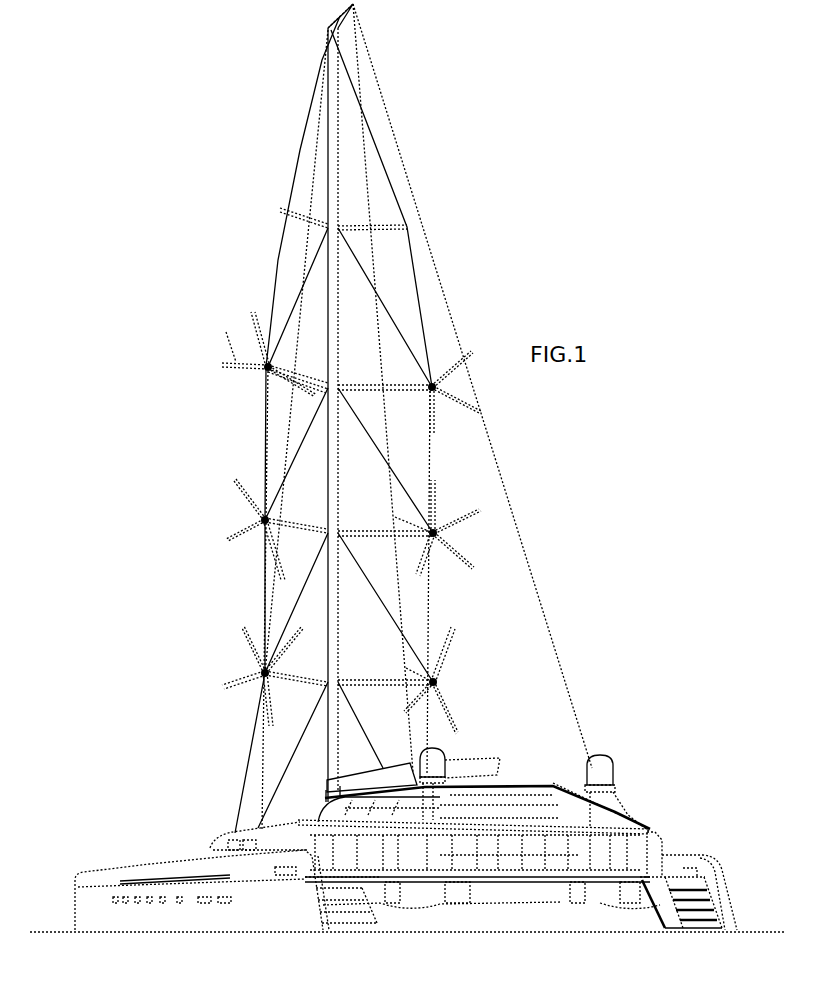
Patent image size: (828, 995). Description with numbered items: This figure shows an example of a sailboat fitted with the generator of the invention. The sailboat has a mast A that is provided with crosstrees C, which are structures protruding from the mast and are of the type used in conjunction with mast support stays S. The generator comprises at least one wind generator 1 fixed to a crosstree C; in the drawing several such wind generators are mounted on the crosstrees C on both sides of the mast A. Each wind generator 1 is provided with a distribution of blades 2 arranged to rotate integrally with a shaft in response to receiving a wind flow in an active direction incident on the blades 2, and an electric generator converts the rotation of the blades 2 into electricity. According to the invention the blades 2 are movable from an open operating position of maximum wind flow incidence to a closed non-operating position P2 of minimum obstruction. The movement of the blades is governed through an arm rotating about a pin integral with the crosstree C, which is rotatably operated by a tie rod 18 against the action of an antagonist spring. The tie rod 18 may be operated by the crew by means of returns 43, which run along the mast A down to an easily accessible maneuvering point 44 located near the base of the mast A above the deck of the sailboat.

The wind generator 1 is at (246, 357).
The blades 2 is at (256, 319).
The tie rod 18 is at (326, 389).
The returns 43 is at (327, 438).
The maneuvering point 44 is at (324, 797).
The mast support stays S is at (276, 271).
The crosstrees C is at (308, 376).
The mast A is at (339, 358).
The closed non-operating position P2 is at (407, 871).